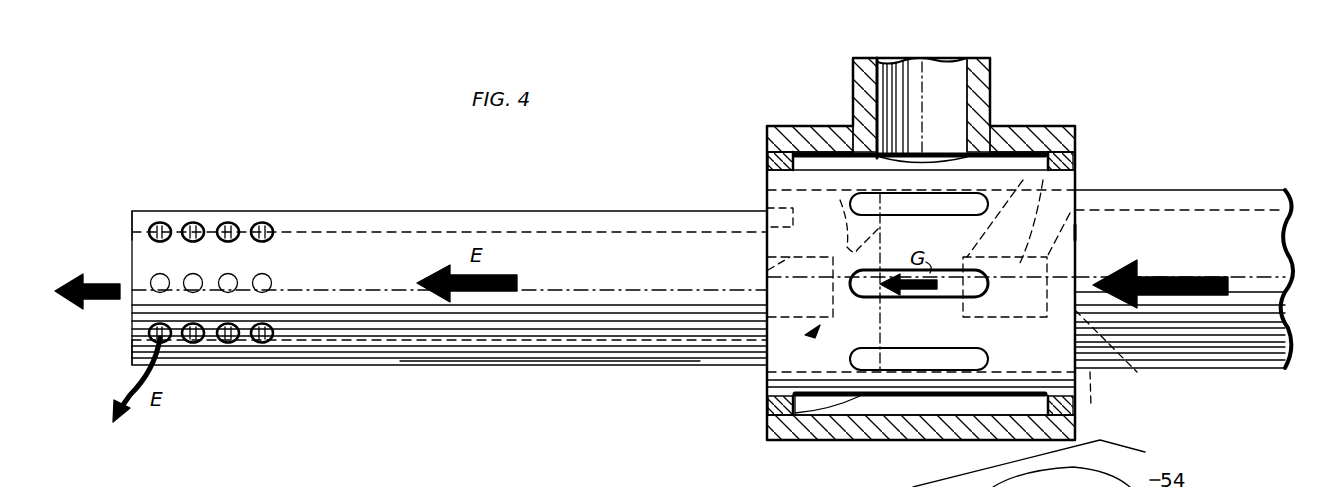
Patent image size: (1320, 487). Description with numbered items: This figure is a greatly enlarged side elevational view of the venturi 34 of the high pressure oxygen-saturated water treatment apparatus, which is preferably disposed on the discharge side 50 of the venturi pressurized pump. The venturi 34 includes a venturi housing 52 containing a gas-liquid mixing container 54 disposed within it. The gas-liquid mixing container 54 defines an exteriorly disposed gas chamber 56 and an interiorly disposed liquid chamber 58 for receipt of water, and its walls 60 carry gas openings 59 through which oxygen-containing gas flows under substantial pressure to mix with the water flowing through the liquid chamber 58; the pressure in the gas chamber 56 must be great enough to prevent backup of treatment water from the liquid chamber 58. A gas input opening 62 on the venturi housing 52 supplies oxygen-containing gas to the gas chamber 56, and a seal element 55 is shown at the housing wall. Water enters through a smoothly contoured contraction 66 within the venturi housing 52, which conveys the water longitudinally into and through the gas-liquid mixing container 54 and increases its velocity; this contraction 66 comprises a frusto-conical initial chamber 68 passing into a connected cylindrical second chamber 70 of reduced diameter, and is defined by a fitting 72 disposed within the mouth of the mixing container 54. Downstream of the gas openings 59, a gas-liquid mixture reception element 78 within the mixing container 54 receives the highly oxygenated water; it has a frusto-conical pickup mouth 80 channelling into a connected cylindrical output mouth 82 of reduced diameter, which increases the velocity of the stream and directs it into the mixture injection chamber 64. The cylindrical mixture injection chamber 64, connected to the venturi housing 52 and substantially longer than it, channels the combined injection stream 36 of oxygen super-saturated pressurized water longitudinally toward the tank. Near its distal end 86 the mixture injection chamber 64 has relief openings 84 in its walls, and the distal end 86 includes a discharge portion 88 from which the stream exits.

The venturi 34 is at (778, 118).
The combined injection stream 36 is at (100, 286).
The discharge side 50 is at (1268, 372).
The venturi housing 52 is at (1015, 133).
The gas-liquid mixing container 54 is at (767, 441).
The seal block 55 is at (767, 160).
The gas chamber 56 is at (1050, 130).
The liquid chamber 58 is at (1080, 173).
The gas openings 59 is at (910, 362).
The walls 60 is at (767, 400).
The gas input opening 62 is at (968, 156).
The mixture injection chamber 64 is at (567, 308).
The smoothly contoured contraction 66 is at (1137, 372).
The frusto-conical initial chamber 68 is at (1104, 399).
The cylindrical second chamber 70 is at (919, 248).
The fitting 72 is at (1076, 232).
The gas-liquid mixture reception element 78 is at (805, 335).
The frusto-conical pickup mouth 80 is at (848, 212).
The cylindrical output mouth 82 is at (767, 272).
The relief openings 84 is at (262, 225).
The distal end 86 is at (132, 212).
The discharge portion 88 is at (130, 358).